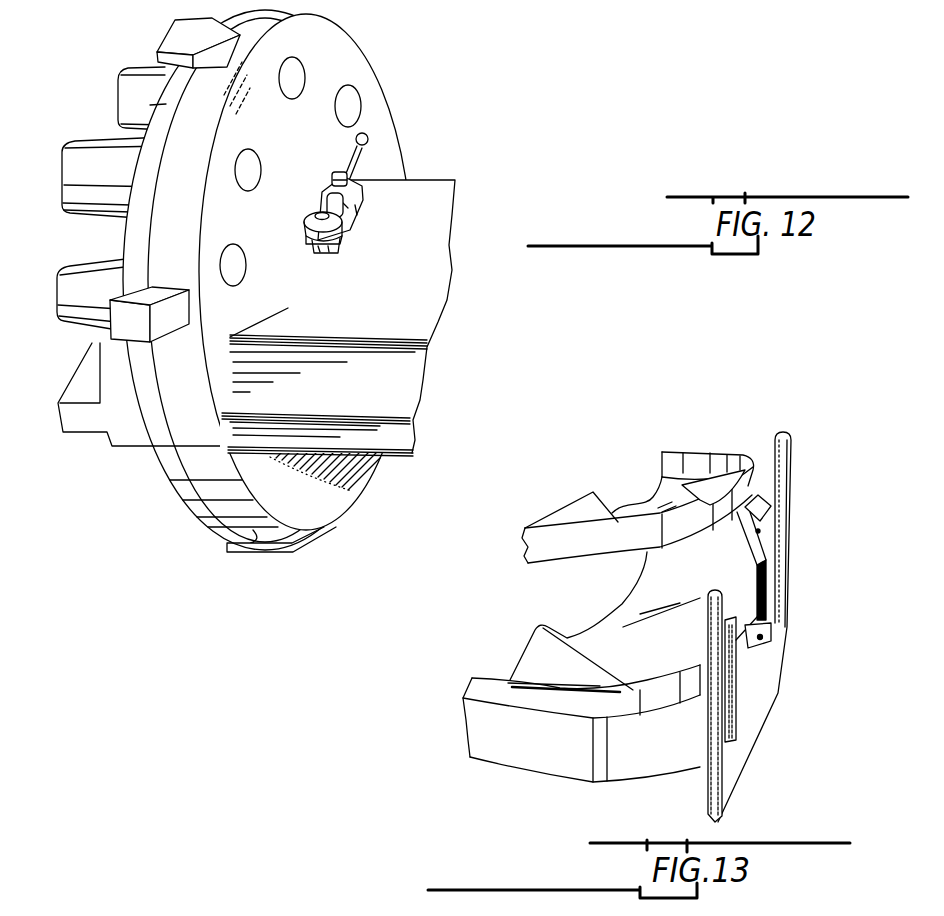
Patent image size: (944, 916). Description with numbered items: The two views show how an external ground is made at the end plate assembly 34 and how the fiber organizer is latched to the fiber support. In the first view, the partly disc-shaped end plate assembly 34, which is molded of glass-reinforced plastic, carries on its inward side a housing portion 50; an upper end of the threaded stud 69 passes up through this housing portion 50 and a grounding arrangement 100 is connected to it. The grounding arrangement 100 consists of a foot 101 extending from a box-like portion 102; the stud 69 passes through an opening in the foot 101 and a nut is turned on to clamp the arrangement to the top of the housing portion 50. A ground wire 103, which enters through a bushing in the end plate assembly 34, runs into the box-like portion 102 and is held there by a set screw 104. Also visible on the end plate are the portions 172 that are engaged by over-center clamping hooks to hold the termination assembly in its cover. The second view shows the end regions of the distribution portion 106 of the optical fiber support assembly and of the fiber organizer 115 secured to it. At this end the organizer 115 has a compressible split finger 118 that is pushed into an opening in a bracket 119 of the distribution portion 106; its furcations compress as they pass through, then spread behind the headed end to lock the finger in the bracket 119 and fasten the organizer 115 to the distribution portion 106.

In FIG. 12, the end plate assembly 34 is at (343, 50).
In FIG. 12, the housing portion 50 is at (432, 347).
In FIG. 12, the threaded stud 69 is at (313, 213).
In FIG. 12, the grounding arrangement 100 is at (382, 227).
In FIG. 12, the foot 101 is at (310, 212).
In FIG. 12, the box-like portion 102 is at (362, 193).
In FIG. 12, the ground wire 103 is at (373, 148).
In FIG. 12, the set screw 104 is at (336, 172).
In FIG. 12, the portions of the splice termination assembly 172 is at (165, 43).
In FIG. 13, the distribution portion 106 is at (518, 771).
In FIG. 13, the fiber organizer 115 is at (553, 566).
In FIG. 13, the compressible split finger 118 is at (757, 530).
In FIG. 13, the bracket 119 is at (745, 653).